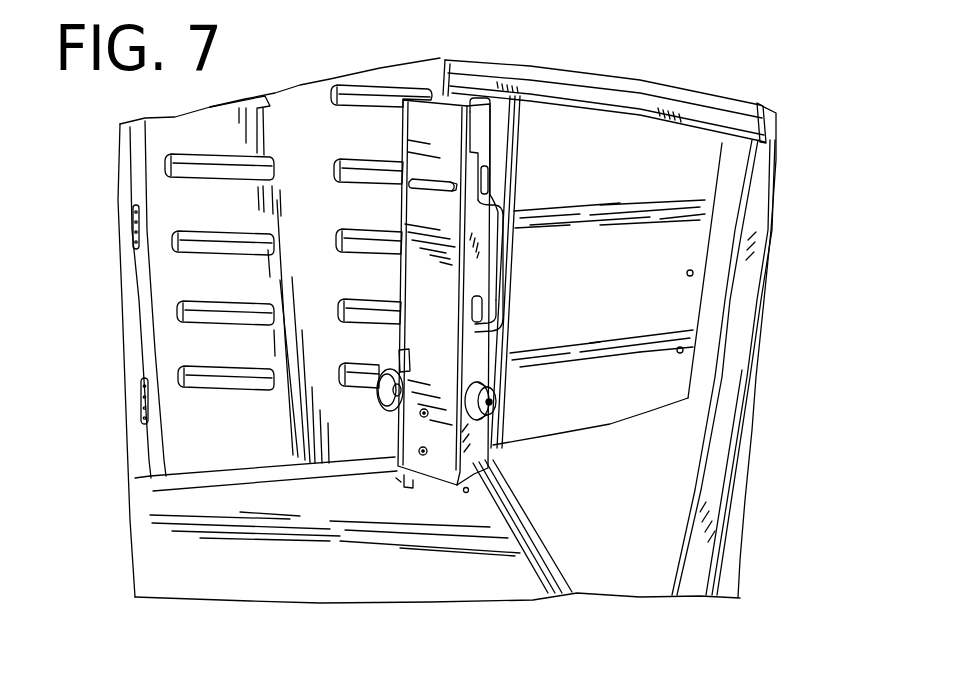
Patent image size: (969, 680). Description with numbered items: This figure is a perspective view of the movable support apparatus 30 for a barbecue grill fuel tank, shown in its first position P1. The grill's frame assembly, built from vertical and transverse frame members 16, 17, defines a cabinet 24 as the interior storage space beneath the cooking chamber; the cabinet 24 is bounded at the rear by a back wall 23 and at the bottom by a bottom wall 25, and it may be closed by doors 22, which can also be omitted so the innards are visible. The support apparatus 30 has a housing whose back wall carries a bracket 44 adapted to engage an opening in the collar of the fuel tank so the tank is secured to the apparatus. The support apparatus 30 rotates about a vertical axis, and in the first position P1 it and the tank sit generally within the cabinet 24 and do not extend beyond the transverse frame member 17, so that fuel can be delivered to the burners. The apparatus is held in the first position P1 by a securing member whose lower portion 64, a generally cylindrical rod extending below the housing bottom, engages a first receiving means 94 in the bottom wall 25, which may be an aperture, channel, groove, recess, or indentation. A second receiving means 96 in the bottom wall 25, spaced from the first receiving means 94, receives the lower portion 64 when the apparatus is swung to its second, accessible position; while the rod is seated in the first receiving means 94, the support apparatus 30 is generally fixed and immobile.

The vertical frame member 16 is at (740, 358).
The transverse frame member 17 is at (572, 92).
The door 22 is at (620, 140).
The back wall 23 is at (195, 347).
The cabinet 24 is at (232, 517).
The bottom wall 25 is at (447, 584).
The support apparatus 30 is at (478, 268).
The bracket 44 is at (425, 178).
The lower portion 64 is at (397, 482).
The first receiving means 94 is at (411, 489).
The second receiving means 96 is at (466, 493).
The first position P1 is at (738, 83).